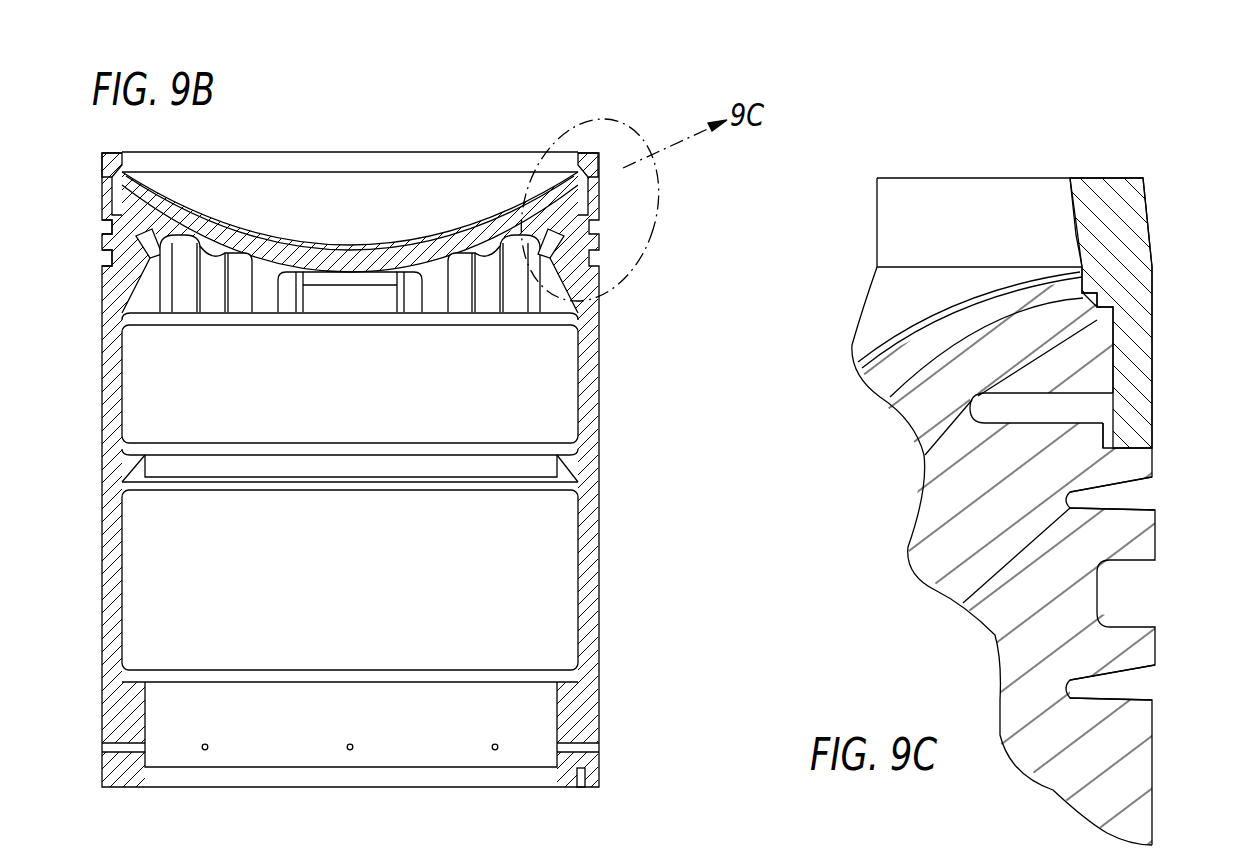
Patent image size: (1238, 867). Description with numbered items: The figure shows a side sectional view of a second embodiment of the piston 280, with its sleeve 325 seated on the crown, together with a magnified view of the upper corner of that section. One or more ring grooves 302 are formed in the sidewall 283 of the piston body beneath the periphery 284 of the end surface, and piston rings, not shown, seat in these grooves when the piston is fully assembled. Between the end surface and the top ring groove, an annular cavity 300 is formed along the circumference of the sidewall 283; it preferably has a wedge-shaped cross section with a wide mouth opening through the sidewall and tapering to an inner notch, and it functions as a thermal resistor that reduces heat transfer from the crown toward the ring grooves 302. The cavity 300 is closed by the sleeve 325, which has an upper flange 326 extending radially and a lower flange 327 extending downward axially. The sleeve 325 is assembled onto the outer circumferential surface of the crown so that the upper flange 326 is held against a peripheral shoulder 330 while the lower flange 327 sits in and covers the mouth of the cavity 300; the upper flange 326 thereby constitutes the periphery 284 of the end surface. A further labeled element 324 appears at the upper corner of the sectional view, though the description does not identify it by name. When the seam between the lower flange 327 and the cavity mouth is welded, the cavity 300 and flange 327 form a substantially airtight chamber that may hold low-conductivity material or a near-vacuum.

In FIG. 9B, the piston 280 is at (618, 613).
In FIG. 9B, the sidewall 283 is at (599, 530).
In FIG. 9C, the periphery 284 is at (1128, 178).
In FIG. 9B, the cavity 300 is at (118, 192).
In FIG. 9C, the cavity 300 is at (1078, 393).
In FIG. 9B, the ring grooves 302 is at (105, 225).
In FIG. 9C, the ring grooves 302 is at (1135, 495).
In FIG. 9B, the retaining lip 324 is at (103, 158).
In FIG. 9B, the sleeve 325 is at (378, 152).
In FIG. 9C, the sleeve 325 is at (1072, 178).
In FIG. 9C, the upper flange 326 is at (1152, 225).
In FIG. 9B, the lower flange 327 is at (112, 210).
In FIG. 9C, the lower flange 327 is at (1152, 420).
In FIG. 9C, the peripheral shoulder 330 is at (1100, 305).